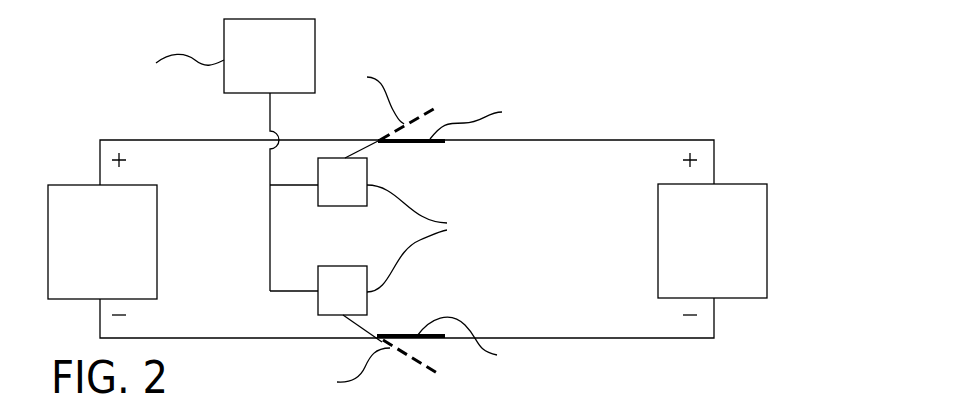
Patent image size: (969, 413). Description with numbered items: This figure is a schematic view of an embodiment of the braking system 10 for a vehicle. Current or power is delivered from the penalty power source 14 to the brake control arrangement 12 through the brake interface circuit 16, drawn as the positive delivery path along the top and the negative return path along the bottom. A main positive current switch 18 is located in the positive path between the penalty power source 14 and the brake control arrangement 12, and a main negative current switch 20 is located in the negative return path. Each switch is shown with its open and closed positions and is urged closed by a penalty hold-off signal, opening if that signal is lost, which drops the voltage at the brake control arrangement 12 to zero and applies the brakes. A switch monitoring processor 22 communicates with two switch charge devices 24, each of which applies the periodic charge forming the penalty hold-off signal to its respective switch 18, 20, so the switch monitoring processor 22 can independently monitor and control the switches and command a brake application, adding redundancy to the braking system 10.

The braking system 10 is at (600, 106).
The brake control arrangement 12 is at (695, 253).
The penalty power source 14 is at (85, 257).
The brake interface circuit 16 is at (608, 185).
The main positive current switch 18 is at (453, 110).
The main negative current switch 20 is at (443, 358).
The switch monitoring processor 22 is at (289, 70).
The switch charge device 24 is at (328, 195).